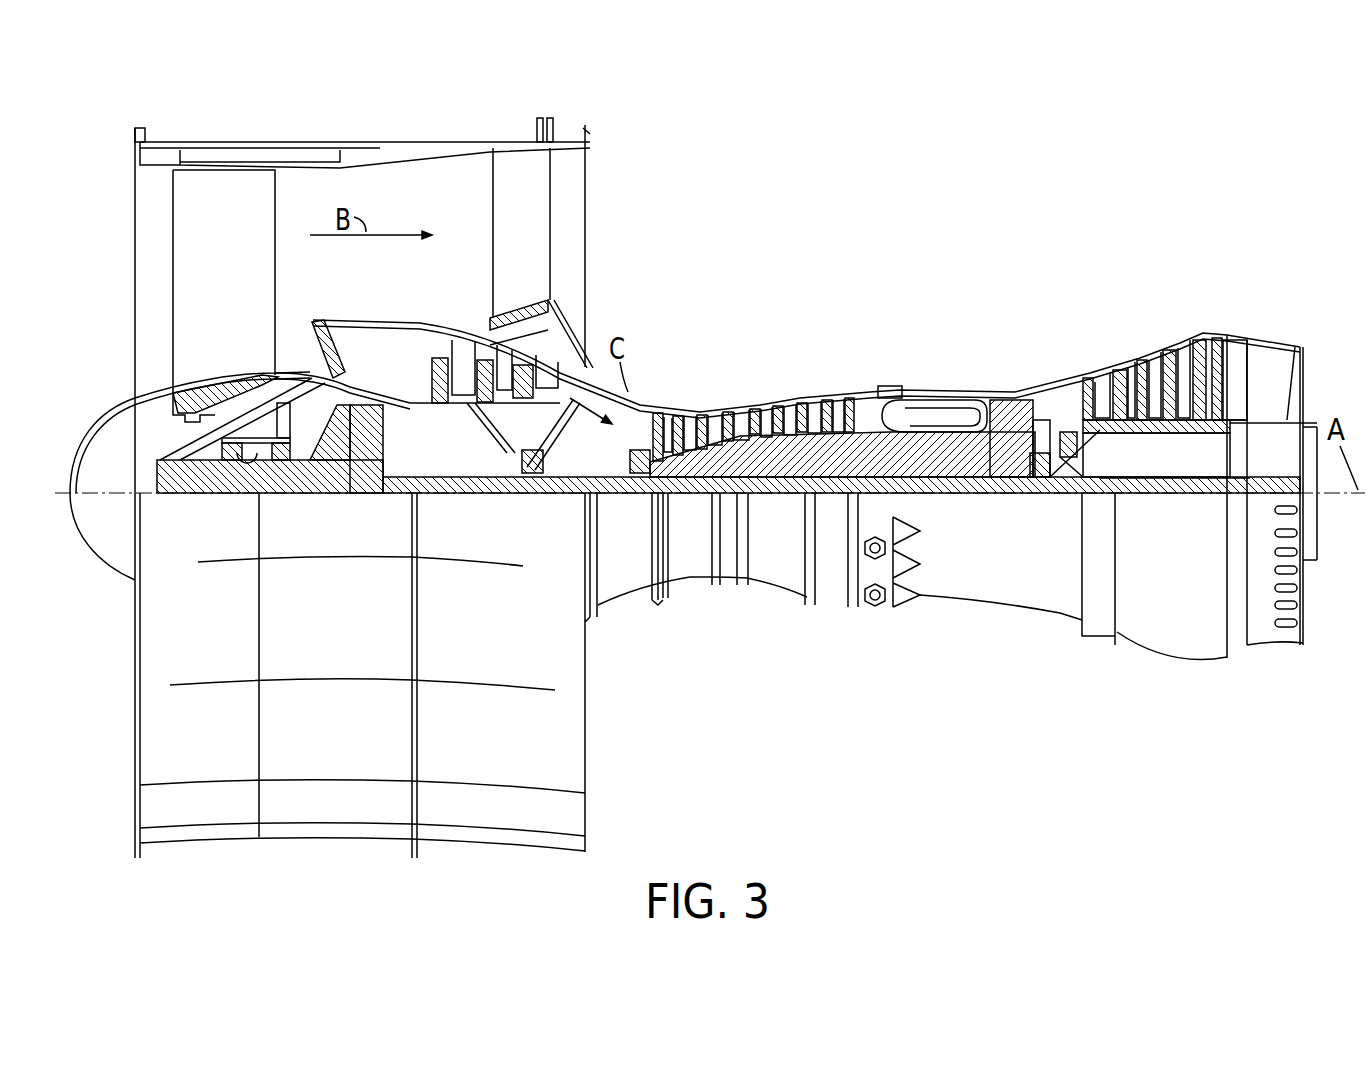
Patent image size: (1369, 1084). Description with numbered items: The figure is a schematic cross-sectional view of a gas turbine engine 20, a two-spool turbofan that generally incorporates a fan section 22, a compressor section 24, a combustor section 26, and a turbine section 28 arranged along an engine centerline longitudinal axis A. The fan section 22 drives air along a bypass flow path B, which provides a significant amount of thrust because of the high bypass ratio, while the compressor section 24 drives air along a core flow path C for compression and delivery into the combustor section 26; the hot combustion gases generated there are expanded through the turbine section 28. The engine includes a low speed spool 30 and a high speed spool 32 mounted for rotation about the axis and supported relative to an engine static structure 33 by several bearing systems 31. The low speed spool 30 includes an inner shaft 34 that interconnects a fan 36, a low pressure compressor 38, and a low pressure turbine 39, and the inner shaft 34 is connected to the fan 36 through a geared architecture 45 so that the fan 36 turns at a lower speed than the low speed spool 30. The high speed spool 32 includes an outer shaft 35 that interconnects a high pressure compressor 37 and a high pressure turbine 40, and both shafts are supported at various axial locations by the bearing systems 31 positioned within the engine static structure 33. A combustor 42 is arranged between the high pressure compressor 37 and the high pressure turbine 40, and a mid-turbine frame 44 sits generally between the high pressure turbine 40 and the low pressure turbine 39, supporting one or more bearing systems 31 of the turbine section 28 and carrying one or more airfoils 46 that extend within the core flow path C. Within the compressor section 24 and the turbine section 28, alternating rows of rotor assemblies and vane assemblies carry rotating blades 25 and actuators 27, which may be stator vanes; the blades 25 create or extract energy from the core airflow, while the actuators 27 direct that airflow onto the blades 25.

The gas turbine engine 20 is at (1080, 186).
The fan section 22 is at (232, 132).
The compressor section 24 is at (644, 378).
The blades 25 is at (432, 358).
The combustor section 26 is at (905, 373).
The actuators 27 is at (455, 408).
The turbine section 28 is at (1165, 357).
The low speed spool 30 is at (783, 500).
The bearing systems 31 is at (232, 488).
The high speed spool 32 is at (818, 440).
The engine static structure 33 is at (831, 612).
The inner shaft 34 is at (615, 493).
The outer shaft 35 is at (947, 482).
The fan 36 is at (208, 266).
The high pressure compressor 37 is at (720, 410).
The low pressure compressor 38 is at (493, 343).
The low pressure turbine 39 is at (1163, 348).
The high pressure turbine 40 is at (1000, 395).
The combustor 42 is at (905, 395).
The mid-turbine frame 44 is at (1052, 372).
The geared architecture 45 is at (362, 486).
The airfoils 46 is at (1063, 430).